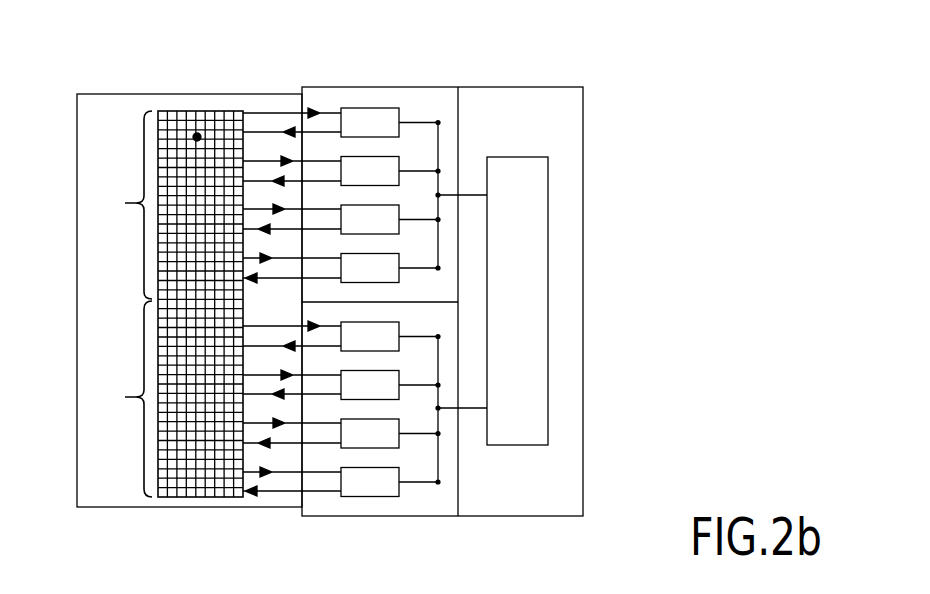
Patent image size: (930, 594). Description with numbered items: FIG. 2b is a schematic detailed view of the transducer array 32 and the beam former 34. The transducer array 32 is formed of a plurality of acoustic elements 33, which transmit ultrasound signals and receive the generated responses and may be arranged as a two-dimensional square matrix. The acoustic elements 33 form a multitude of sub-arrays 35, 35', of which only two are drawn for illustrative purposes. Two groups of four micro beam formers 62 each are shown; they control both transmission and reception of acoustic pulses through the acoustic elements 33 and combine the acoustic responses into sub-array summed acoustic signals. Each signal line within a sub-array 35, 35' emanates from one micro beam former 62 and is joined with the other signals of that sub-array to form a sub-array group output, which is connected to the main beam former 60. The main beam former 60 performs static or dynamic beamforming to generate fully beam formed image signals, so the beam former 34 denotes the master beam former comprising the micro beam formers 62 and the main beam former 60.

The transducer array 32 is at (273, 93).
The acoustic element 33 is at (199, 135).
The beam former 34 is at (583, 140).
The sub-array 35 is at (122, 205).
The sub-array 35' is at (117, 399).
The main beam former 60 is at (514, 157).
The micro beam former 62 is at (378, 165).